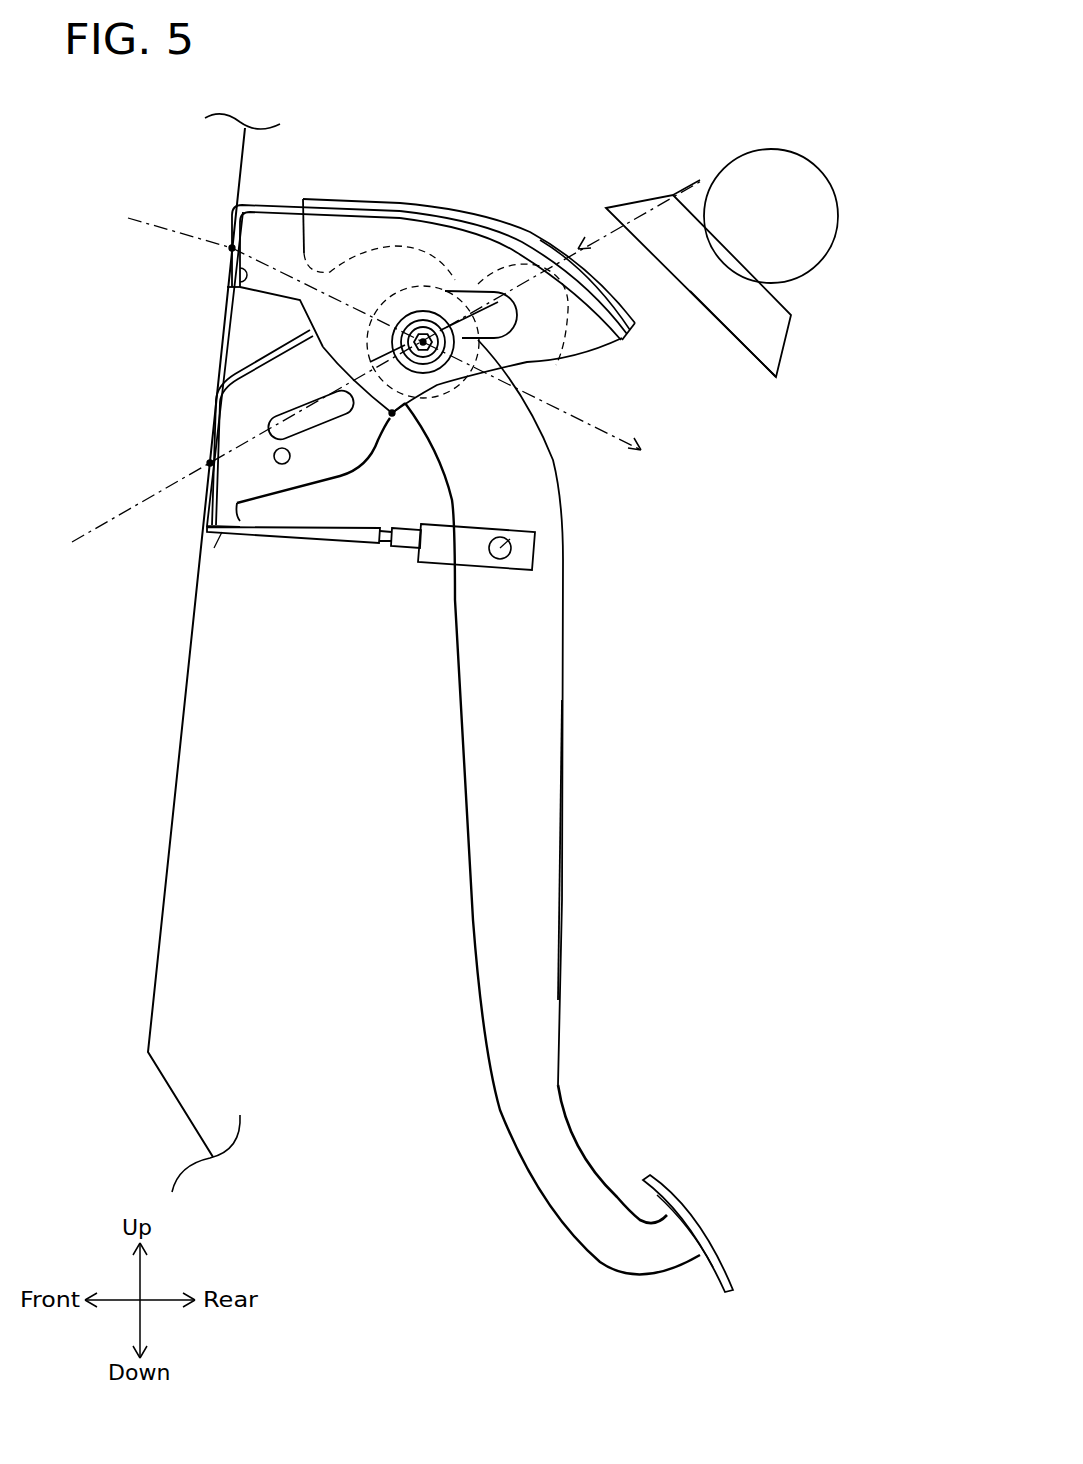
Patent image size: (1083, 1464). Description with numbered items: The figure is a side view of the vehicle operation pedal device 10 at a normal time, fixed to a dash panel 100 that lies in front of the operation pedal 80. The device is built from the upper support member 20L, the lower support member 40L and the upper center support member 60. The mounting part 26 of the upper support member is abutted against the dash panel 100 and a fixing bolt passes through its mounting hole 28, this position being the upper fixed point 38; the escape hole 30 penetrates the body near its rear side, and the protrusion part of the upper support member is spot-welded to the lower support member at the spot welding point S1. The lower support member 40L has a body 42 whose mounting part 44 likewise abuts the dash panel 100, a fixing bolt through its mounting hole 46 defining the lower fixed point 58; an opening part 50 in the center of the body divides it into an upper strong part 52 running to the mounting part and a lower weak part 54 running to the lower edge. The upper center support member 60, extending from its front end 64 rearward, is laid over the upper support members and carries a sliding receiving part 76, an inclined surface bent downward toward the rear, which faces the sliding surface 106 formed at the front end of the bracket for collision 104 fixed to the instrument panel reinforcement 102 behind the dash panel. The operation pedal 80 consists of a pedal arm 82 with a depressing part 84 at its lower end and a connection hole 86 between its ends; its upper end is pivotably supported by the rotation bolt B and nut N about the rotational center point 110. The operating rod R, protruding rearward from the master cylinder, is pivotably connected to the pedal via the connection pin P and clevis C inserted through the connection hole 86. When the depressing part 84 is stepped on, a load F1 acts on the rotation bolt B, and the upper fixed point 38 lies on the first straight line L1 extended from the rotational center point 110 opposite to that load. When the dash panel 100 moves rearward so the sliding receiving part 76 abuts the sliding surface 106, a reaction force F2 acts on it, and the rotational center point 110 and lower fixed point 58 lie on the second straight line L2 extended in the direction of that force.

The vehicle operation pedal device 10 is at (528, 62).
The upper support member 20L is at (610, 352).
The mounting part 26 is at (227, 285).
The mounting hole 28 is at (256, 235).
The escape hole 30 is at (471, 292).
The upper fixed point 38 is at (232, 232).
The lower support member 40L is at (221, 537).
The body 42 is at (207, 447).
The mounting part 44 is at (213, 414).
The mounting hole 46 is at (200, 518).
The opening part 50 is at (275, 537).
The upper strong part 52 is at (222, 397).
The lower weak part 54 is at (325, 542).
The lower fixed point 58 is at (206, 462).
The upper center support member 60 is at (345, 200).
The front end 64 is at (300, 200).
The sliding receiving part 76 is at (623, 306).
The operation pedal 80 is at (576, 782).
The pedal arm 82 is at (535, 1022).
The depressing part 84 is at (783, 1240).
The connection hole 86 is at (503, 560).
The dash panel 100 is at (150, 1033).
The instrument panel reinforcement 102 is at (810, 152).
The bracket for collision 104 is at (647, 200).
The sliding surface 106 is at (773, 383).
The rotational center point 110 is at (262, 366).
The rotation bolt B is at (422, 338).
The clevis C is at (430, 568).
The nut N is at (300, 327).
The connection pin P is at (503, 548).
The operating rod R is at (305, 525).
The spot welding point S1 is at (394, 416).
The load F1 is at (613, 455).
The reaction force F2 is at (608, 233).
The first straight line L1 is at (367, 328).
The second straight line L2 is at (85, 548).